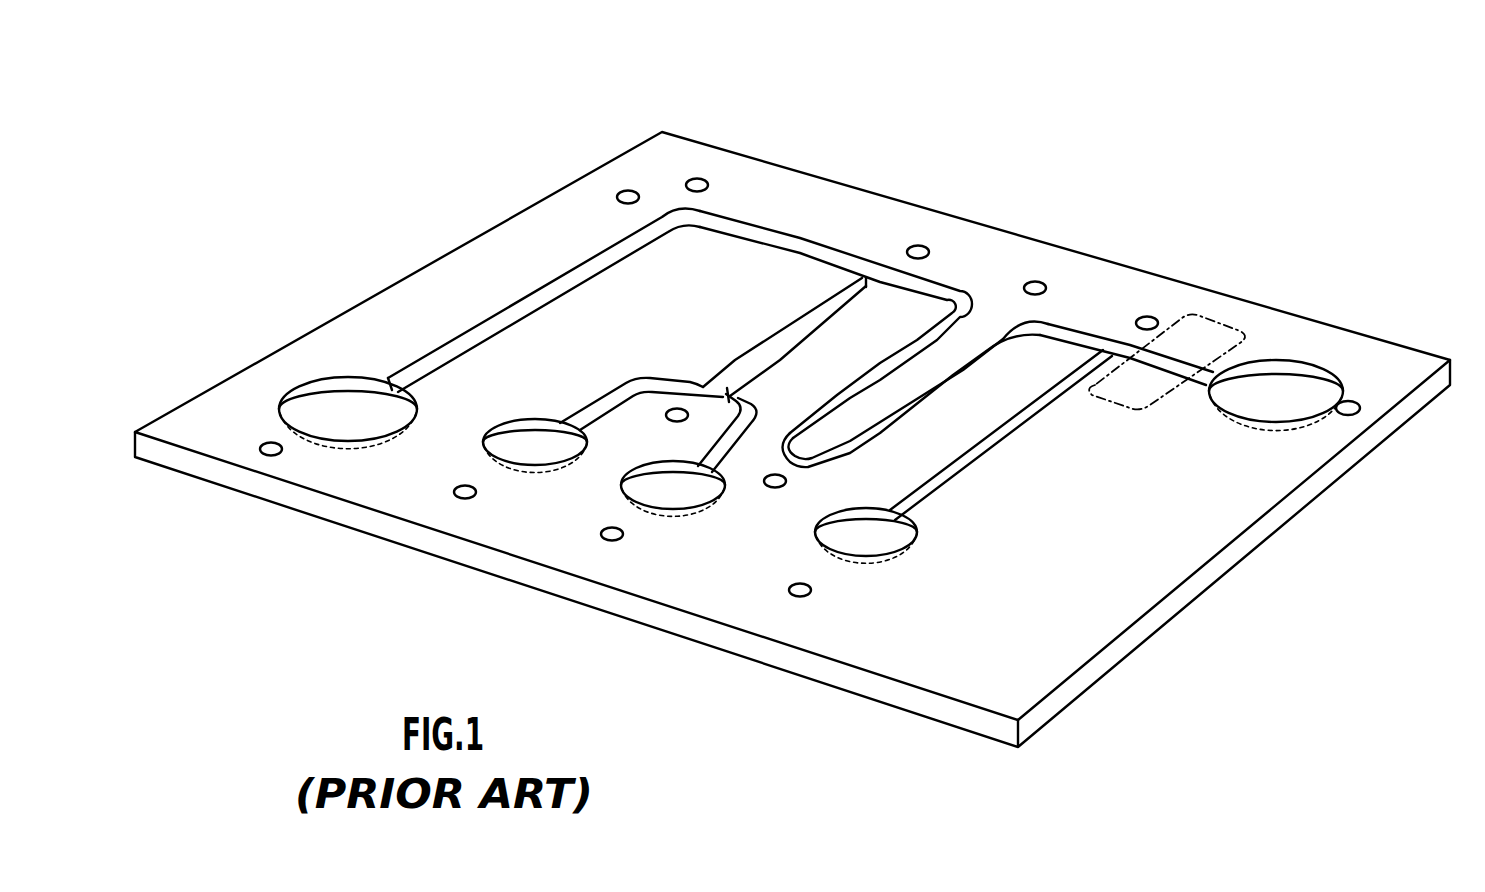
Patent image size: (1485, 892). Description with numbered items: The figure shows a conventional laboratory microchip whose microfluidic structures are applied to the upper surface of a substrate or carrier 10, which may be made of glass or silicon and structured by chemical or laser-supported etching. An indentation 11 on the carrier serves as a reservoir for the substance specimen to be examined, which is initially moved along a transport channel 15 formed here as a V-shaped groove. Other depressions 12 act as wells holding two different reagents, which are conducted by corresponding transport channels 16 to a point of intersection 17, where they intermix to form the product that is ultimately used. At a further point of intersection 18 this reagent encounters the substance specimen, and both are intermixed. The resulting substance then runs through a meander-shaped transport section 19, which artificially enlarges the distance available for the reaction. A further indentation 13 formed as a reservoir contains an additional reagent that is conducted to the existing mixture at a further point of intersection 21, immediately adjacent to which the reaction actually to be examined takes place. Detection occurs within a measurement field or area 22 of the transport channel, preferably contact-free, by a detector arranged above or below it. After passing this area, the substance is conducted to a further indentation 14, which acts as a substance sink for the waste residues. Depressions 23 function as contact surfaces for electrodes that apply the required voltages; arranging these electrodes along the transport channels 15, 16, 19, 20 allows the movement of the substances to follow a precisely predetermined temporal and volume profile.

The substrate or carrier 10 is at (600, 596).
The indentation 11 is at (322, 405).
The depressions 12 is at (513, 448).
The further indentation 13 is at (882, 555).
The further indentation 14 is at (1240, 404).
The transport channel 15 is at (493, 316).
The transport channels 16 is at (578, 408).
The point of intersection 17 is at (698, 378).
The further point of intersection 18 is at (867, 264).
The meander-shaped transport section 19 is at (950, 383).
The transport channel 20 is at (1000, 440).
The further point of intersection 21 is at (1111, 328).
The measurement field or area 22 is at (1213, 330).
The depressions (electrode contact surfaces) 23 is at (624, 193).